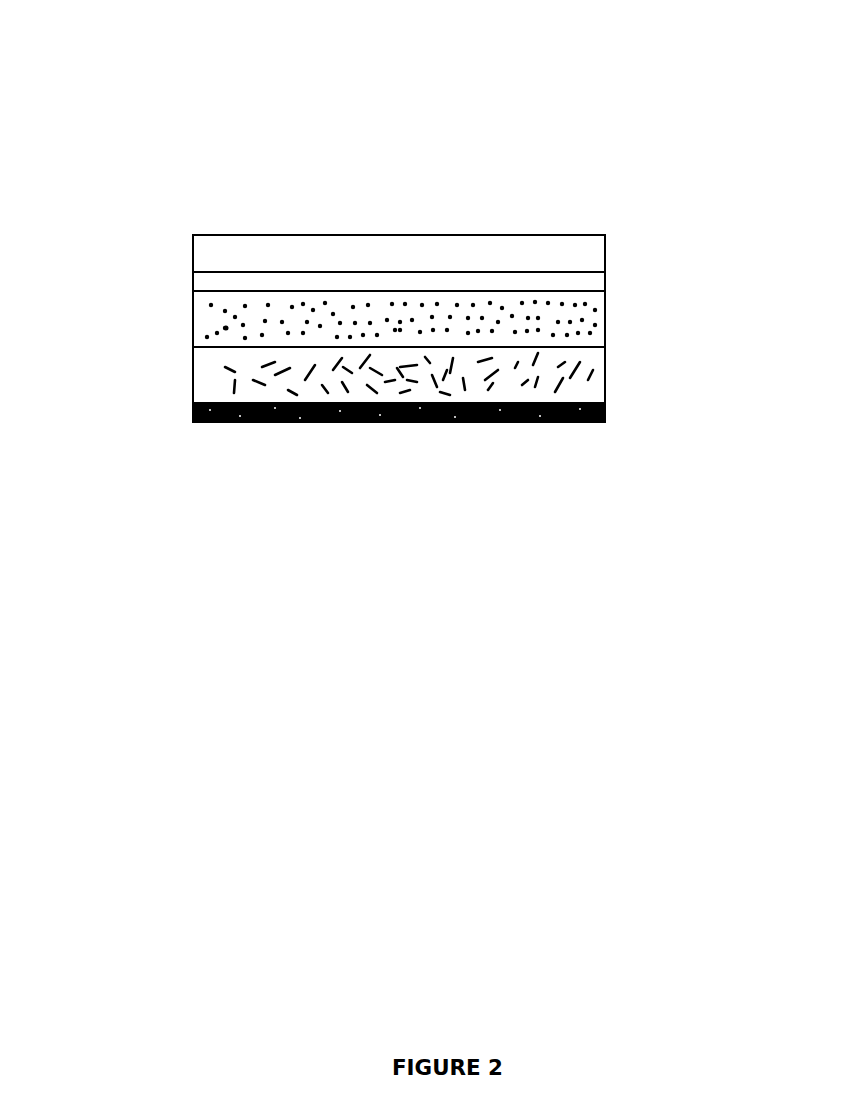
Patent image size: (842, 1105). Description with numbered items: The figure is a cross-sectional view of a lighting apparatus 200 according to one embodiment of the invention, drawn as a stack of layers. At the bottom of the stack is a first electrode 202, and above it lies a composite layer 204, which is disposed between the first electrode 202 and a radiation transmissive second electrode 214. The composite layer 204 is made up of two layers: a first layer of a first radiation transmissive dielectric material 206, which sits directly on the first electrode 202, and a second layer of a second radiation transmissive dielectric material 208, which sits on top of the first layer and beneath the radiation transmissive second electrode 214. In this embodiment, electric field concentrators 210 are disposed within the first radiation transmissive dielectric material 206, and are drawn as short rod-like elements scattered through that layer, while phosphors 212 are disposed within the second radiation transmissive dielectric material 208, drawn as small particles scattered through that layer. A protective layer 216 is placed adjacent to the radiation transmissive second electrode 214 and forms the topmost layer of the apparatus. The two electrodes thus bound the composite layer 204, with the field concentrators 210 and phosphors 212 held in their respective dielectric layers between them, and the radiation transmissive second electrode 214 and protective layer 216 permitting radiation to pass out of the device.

The lighting apparatus 200 is at (150, 98).
The first electrode 202 is at (605, 423).
The composite layer 204 is at (645, 349).
The first radiation transmissive dielectric material 206 is at (192, 368).
The second radiation transmissive dielectric material 208 is at (192, 308).
The electric field concentrators 210 is at (230, 385).
The phosphors 212 is at (220, 330).
The radiation transmissive second electrode 214 is at (605, 285).
The protective layer 216 is at (515, 235).